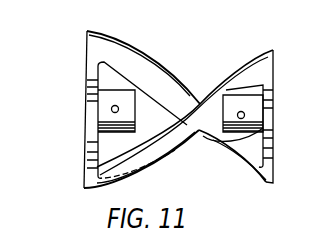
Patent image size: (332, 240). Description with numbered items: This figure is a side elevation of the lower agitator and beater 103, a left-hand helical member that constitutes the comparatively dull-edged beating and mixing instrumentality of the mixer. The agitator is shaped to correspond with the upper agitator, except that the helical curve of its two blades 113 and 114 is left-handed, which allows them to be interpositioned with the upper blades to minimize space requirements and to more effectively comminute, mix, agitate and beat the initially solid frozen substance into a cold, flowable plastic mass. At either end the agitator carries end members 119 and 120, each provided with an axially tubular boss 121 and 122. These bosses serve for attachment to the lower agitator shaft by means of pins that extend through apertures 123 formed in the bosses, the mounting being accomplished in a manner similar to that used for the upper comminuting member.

The lower agitator and beater 103 is at (160, 62).
The blade 113 is at (173, 77).
The blade 114 is at (143, 155).
The axially tubular boss 121 is at (97, 94).
The end member 119 is at (88, 144).
The aperture 123 is at (111, 110).
The axially tubular boss 122 is at (253, 103).
The end member 120 is at (265, 147).